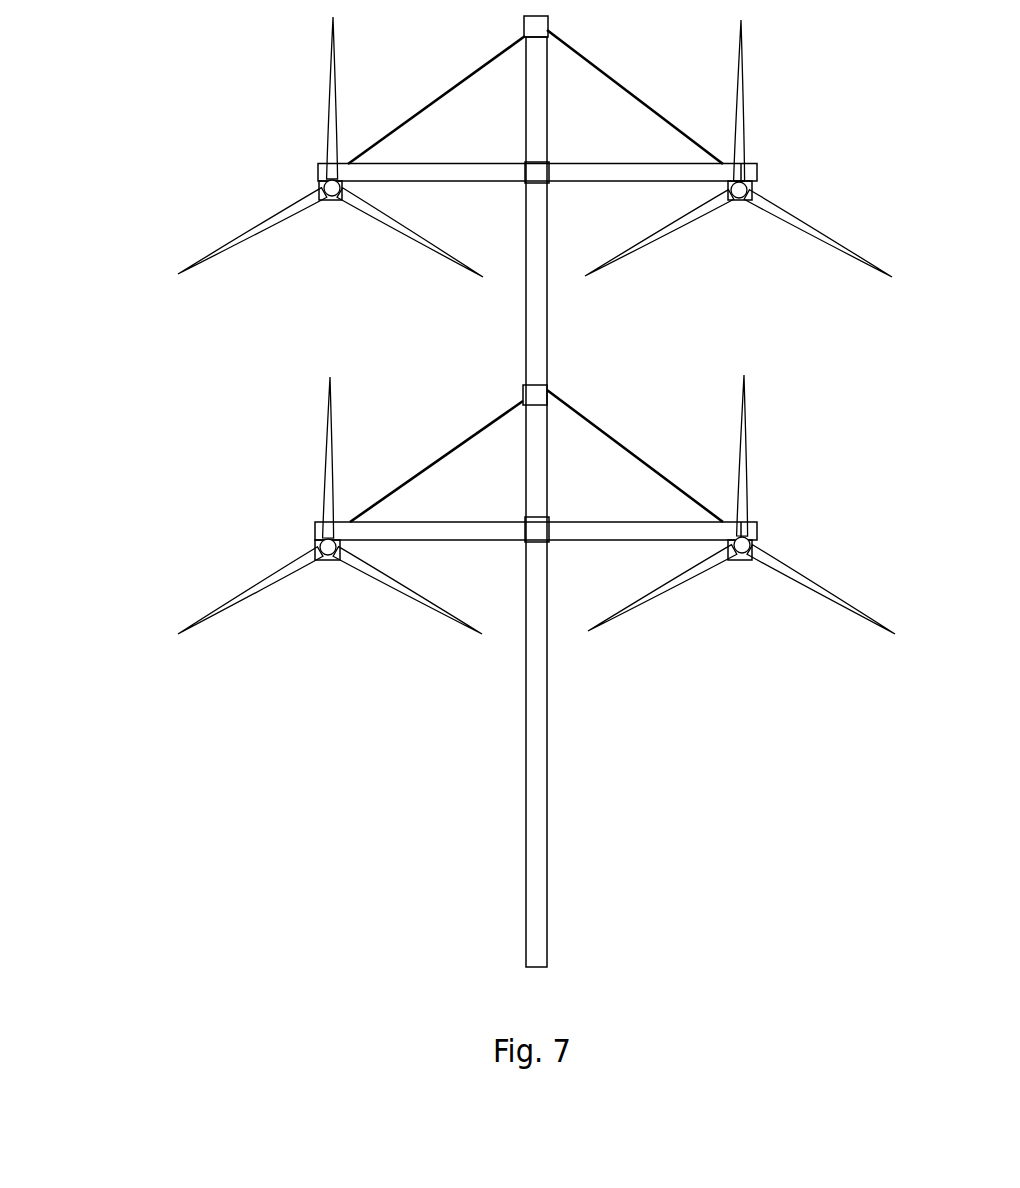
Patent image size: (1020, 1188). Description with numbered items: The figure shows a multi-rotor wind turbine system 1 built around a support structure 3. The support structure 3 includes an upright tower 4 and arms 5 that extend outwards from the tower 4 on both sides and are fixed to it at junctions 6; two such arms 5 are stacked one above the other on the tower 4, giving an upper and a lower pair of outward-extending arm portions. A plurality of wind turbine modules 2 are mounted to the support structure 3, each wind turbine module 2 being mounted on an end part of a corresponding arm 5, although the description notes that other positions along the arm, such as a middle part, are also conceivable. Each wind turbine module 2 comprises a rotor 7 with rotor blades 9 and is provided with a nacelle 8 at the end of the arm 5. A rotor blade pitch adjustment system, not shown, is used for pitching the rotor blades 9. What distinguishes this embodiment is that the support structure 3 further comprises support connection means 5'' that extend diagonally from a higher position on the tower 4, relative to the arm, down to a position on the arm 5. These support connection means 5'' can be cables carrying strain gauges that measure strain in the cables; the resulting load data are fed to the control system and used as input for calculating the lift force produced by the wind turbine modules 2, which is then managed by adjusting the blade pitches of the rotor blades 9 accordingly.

The wind turbine system 1 is at (163, 117).
The wind turbine module 2 is at (307, 248).
The support structure 3 is at (555, 358).
The tower 4 is at (525, 755).
The arm 5 is at (536, 316).
The support connection means 5'' is at (535, 261).
The junction 6 is at (526, 162).
The rotor 7 is at (765, 179).
The nacelle 8 is at (753, 542).
The rotor blade 9 is at (747, 117).